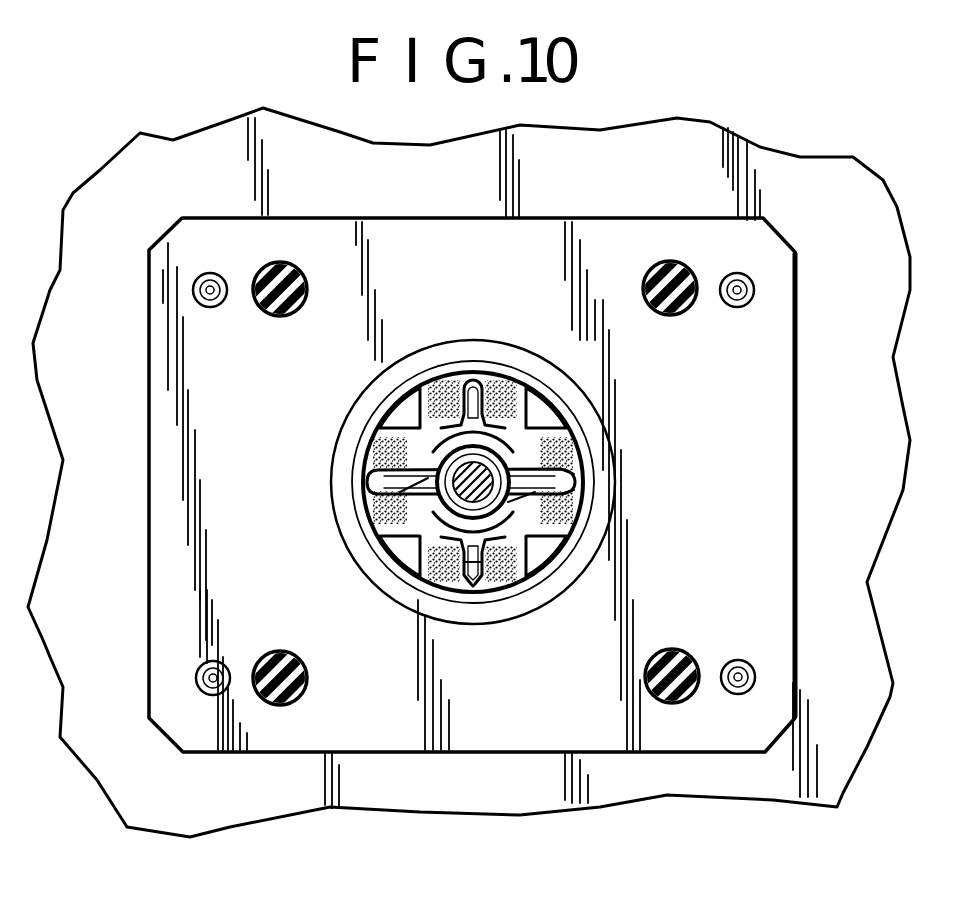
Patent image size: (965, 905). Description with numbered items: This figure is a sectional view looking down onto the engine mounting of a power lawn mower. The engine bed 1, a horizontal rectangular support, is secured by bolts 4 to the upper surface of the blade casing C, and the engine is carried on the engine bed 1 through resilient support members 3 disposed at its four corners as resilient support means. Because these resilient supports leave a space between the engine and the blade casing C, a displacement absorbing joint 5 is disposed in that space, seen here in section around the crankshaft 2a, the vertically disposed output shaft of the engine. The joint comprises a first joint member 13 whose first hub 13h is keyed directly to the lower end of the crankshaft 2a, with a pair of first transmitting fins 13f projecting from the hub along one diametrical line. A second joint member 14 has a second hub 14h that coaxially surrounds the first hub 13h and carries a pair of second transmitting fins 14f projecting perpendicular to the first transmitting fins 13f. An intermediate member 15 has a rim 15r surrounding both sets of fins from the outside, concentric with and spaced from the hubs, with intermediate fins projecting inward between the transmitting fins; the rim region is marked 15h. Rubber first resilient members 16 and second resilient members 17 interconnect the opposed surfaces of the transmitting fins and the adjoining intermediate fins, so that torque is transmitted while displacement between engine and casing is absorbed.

The engine bed 1 is at (777, 427).
The crankshaft 2a is at (493, 484).
The resilient support members 3 is at (290, 316).
The bolts 4 is at (213, 308).
The displacement absorbing joint 5 is at (508, 338).
The first joint member 13 is at (489, 547).
The first transmitting fins 13f is at (528, 500).
The first hub 13h is at (508, 502).
The second joint member 14 is at (478, 411).
The second transmitting fins 14f is at (505, 584).
The second hub 14h is at (430, 510).
The intermediate member 15 is at (412, 444).
The yoke window 15h is at (418, 412).
The rim 15r is at (432, 352).
The first resilient member 16 is at (374, 458).
The second resilient member 17 is at (449, 584).
The blade casing C is at (890, 258).